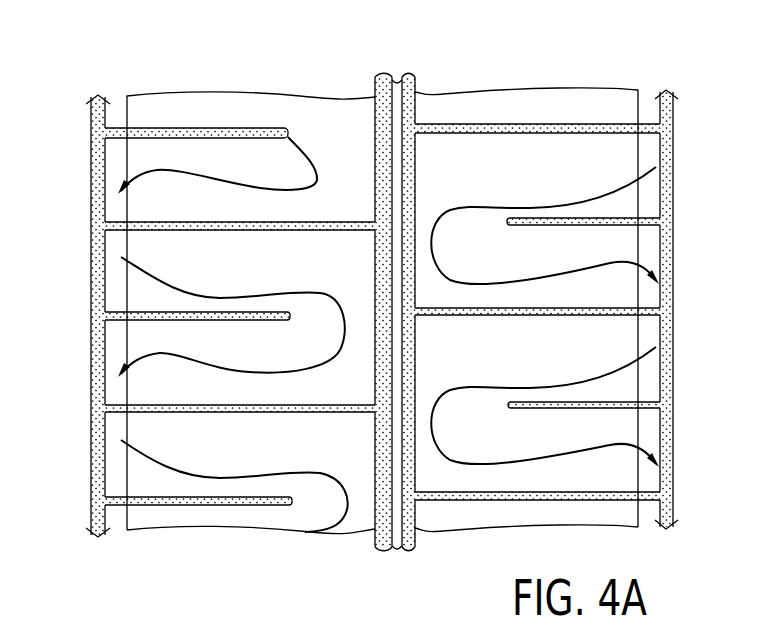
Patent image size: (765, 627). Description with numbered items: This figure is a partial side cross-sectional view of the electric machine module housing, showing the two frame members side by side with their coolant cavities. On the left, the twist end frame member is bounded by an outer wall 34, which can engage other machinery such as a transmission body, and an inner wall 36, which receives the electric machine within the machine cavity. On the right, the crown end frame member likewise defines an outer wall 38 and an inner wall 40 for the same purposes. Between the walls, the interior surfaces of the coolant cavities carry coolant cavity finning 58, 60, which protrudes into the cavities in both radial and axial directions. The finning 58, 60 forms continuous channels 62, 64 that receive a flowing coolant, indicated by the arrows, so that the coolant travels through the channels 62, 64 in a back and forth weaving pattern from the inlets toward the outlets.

The outer wall 34 is at (92, 160).
The inner wall 36 is at (370, 110).
The outer wall 38 is at (675, 148).
The inner wall 40 is at (413, 110).
The coolant cavity finning 58 is at (306, 102).
The coolant cavity finning 60 is at (497, 135).
The continuous channel 62 is at (207, 105).
The continuous channel 64 is at (533, 105).